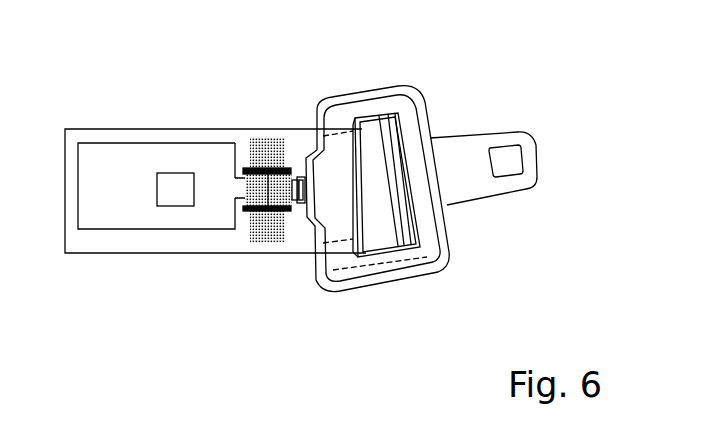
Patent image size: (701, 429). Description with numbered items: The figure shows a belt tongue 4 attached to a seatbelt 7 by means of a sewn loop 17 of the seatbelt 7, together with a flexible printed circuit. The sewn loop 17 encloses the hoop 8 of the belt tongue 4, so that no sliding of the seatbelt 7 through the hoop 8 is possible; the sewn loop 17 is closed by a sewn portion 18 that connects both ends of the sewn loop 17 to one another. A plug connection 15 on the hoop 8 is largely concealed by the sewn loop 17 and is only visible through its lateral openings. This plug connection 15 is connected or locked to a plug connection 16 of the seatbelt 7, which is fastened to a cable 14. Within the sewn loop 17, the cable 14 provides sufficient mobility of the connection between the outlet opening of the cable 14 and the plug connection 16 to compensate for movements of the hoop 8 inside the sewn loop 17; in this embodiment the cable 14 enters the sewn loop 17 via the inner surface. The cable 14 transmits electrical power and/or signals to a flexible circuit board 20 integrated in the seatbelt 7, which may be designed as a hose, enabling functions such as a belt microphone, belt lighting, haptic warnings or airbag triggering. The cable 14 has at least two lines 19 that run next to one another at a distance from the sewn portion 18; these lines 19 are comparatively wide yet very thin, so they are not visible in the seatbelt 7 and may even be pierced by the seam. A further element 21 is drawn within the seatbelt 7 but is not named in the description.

The belt tongue 4 is at (445, 273).
The seatbelt 7 is at (92, 246).
The hoop 8 is at (318, 226).
The cable 14 is at (297, 175).
The plug connection 15 is at (308, 205).
The plug connection 16 is at (287, 214).
The sewn loop 17 is at (301, 152).
The sewn portion 18 is at (266, 232).
The lines 19 is at (244, 172).
The flexible circuit board 20 is at (125, 213).
The sensor 21 is at (178, 192).